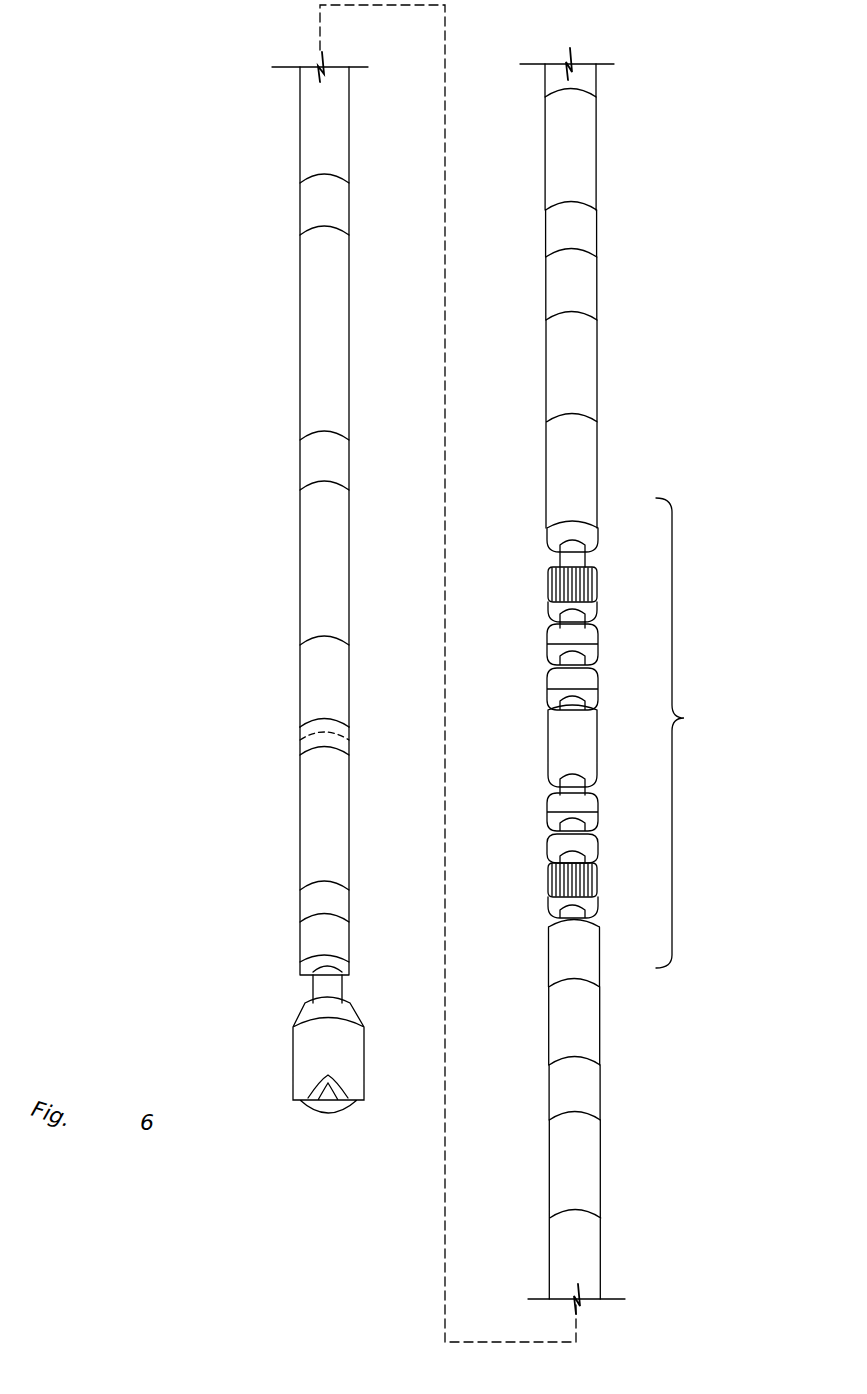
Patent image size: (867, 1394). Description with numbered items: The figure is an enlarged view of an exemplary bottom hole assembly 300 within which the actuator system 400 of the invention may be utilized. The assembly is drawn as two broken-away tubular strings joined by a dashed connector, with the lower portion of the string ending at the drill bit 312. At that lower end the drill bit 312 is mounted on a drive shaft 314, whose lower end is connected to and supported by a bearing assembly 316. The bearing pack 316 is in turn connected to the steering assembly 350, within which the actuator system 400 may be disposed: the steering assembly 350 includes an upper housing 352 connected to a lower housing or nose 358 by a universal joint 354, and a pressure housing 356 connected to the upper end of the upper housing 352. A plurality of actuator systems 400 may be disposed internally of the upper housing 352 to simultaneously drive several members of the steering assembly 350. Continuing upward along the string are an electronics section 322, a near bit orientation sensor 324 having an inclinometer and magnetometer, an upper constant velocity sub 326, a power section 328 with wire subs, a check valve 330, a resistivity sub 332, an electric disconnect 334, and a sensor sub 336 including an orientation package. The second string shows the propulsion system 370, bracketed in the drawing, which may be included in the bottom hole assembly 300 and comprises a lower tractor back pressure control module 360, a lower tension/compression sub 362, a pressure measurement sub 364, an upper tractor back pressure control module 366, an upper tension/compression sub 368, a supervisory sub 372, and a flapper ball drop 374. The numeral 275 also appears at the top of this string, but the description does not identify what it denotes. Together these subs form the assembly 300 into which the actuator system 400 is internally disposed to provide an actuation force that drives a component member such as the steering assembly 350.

The bottom hole assembly 300 is at (741, 443).
The drill string tubular 275 is at (598, 88).
The drill bit 312 is at (293, 1052).
The drive shaft 314 is at (322, 985).
The bearing assembly 316 is at (312, 947).
The electronics section 322 is at (304, 752).
The near bit orientation sensor 324 is at (308, 727).
The upper constant velocity sub 326 is at (300, 672).
The power section 328 is at (300, 577).
The check valve 330 is at (300, 468).
The resistivity sub 332 is at (300, 345).
The electric disconnect 334 is at (300, 225).
The sensor sub 336 is at (300, 118).
The steering assembly 350 is at (304, 828).
The upper housing 352 is at (306, 850).
The universal joint 354 is at (310, 886).
The pressure housing 356 is at (306, 742).
The lower housing 358 is at (308, 916).
The lower tractor back pressure control module 360 is at (601, 1178).
The lower tension/compression sub 362 is at (601, 1097).
The pressure measurement sub 364 is at (601, 1028).
The upper tractor back pressure control module 366 is at (598, 370).
The upper tension/compression sub 368 is at (598, 295).
The propulsion system 370 is at (644, 742).
The supervisory sub 372 is at (598, 240).
The flapper ball drop 374 is at (598, 158).
The actuator system 400 is at (302, 791).